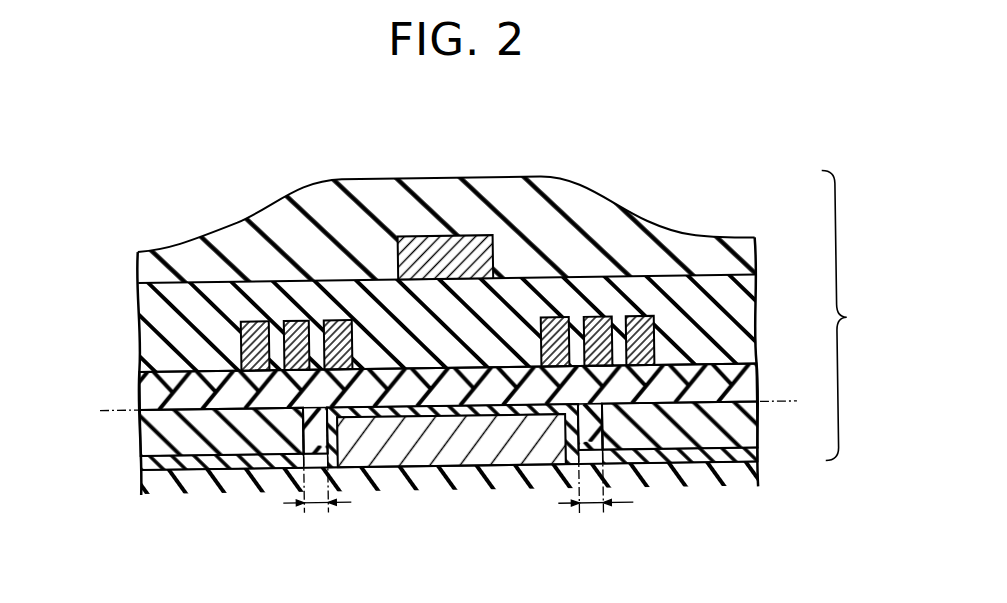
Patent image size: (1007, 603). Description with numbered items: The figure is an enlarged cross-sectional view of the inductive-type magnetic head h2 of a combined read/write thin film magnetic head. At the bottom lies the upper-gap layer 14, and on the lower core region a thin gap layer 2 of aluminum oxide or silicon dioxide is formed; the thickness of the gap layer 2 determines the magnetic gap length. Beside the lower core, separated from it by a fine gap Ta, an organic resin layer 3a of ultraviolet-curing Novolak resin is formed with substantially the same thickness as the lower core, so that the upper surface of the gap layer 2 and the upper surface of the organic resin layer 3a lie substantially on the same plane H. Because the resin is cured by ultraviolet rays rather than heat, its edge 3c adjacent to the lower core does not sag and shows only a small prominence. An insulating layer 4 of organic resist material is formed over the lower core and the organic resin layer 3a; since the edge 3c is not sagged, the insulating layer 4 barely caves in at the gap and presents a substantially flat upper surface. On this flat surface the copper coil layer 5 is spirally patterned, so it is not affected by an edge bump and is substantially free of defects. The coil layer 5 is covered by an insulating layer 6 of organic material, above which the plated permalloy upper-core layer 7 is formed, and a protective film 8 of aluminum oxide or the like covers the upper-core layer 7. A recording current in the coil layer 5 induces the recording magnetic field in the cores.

The upper-gap layer 14 is at (165, 484).
The gap layer 2 is at (150, 464).
The organic resin layer 3a is at (150, 440).
The edge 3c is at (302, 397).
The insulating layer 4 is at (162, 392).
The coil layer 5 is at (298, 323).
The insulating layer 6 is at (178, 325).
The upper-core layer 7 is at (430, 255).
The protective film 8 is at (190, 263).
The plane H— H is at (444, 402).
The fine gap Ta is at (458, 485).
The inductive-type magnetic head h2 is at (859, 315).